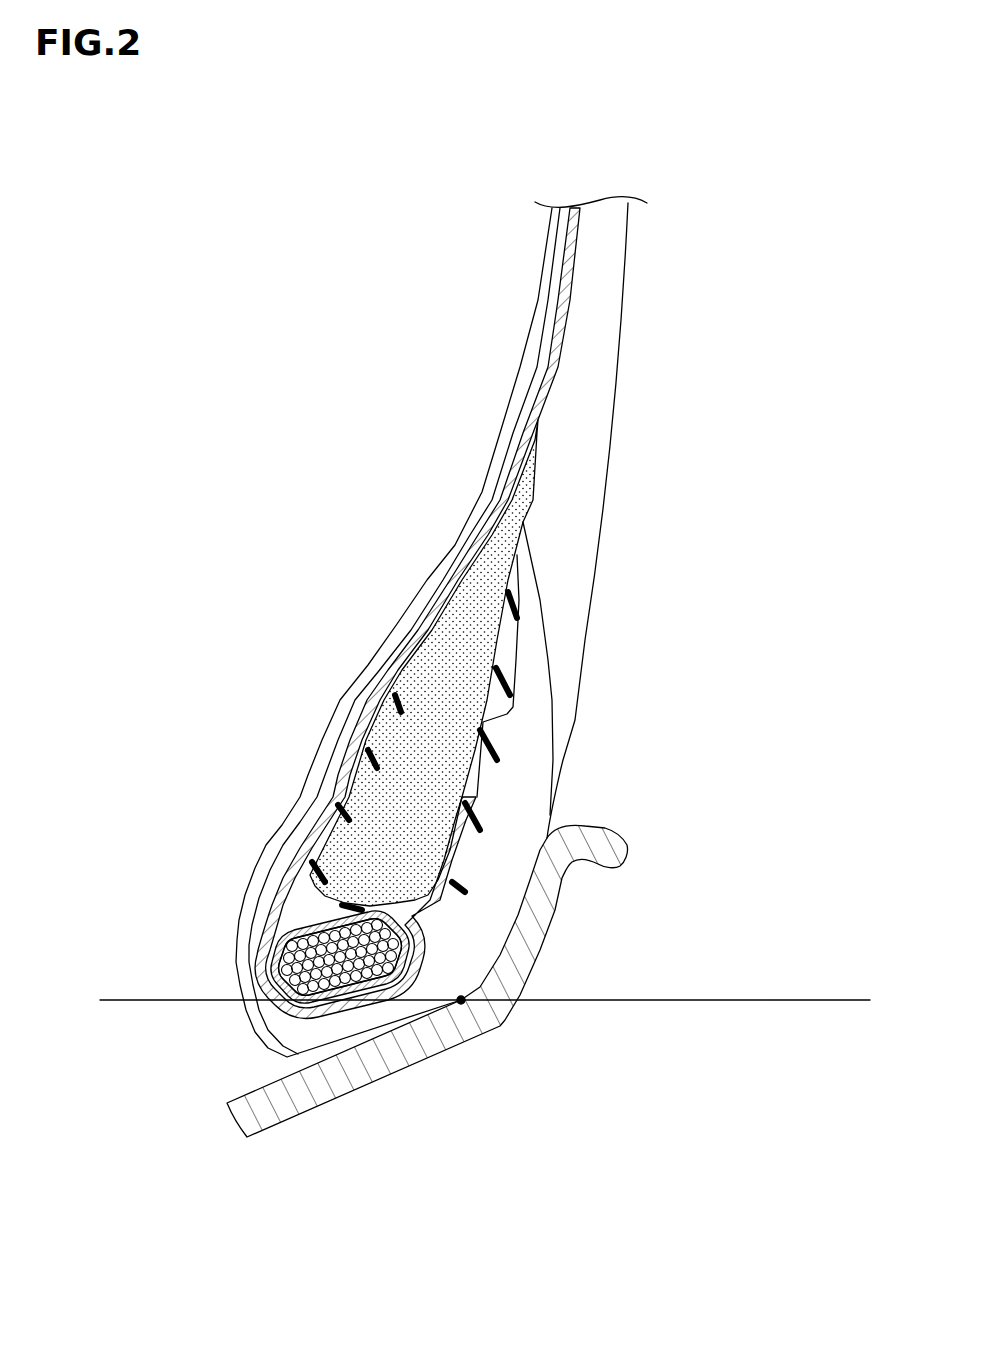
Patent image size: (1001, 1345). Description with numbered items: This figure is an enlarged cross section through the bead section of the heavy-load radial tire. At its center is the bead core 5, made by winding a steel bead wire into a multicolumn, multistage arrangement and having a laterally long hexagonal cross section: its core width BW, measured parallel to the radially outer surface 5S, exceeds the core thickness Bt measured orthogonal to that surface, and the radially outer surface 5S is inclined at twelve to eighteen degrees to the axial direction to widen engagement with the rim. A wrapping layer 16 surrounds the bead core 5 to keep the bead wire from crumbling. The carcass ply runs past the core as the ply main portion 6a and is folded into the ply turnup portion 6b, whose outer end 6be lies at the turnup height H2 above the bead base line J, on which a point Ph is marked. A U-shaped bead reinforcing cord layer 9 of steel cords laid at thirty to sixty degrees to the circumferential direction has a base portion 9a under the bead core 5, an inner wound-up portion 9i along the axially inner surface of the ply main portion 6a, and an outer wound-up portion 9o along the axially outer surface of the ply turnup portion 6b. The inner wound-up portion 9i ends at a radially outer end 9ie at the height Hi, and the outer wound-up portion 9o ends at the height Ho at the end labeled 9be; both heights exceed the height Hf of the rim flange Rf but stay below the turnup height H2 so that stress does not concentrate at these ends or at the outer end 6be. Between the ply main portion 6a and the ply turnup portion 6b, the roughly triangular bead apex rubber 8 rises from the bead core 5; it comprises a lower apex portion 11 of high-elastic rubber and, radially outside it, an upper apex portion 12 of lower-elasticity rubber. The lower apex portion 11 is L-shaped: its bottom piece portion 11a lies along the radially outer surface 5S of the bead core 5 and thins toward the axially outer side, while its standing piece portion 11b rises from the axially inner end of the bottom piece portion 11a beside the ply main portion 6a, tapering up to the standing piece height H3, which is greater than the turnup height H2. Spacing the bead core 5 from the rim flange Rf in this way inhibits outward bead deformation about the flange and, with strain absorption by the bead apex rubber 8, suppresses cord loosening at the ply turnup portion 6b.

The bead core 5 is at (404, 1005).
The radially outer surface of the bead core 5S is at (372, 922).
The ply main portion 6a is at (502, 503).
The ply turnup portion 6b is at (520, 892).
The outer end of the ply turnup portion 6be is at (496, 709).
The bead apex rubber 8 is at (188, 598).
The bead reinforcing cord layer 9 is at (395, 992).
The base portion 9a is at (348, 1020).
The inner wound-up portion 9i is at (335, 835).
The radially outer end of the inner wound-up portion 9ie is at (304, 780).
The outer wound-up portion 9o is at (440, 925).
The turnup edge 9be is at (496, 788).
The lower apex portion 11 is at (252, 652).
The bottom piece portion 11a is at (351, 790).
The standing piece portion 11b is at (388, 735).
The upper apex portion 12 is at (457, 647).
The wrapping layer 16 is at (322, 908).
The rim flange Rf is at (558, 923).
The bead base line J is at (688, 1001).
The bead heel point Ph is at (463, 1004).
The radial height of the inner wound-up portion Hi is at (105, 798).
The radial height of the outer wound-up portion Ho is at (105, 798).
The height of the rim flange Hf is at (560, 827).
The turnup height H2 is at (486, 721).
The standing piece height H3 is at (420, 662).
The core thickness Bt is at (197, 990).
The core width BW is at (305, 1085).